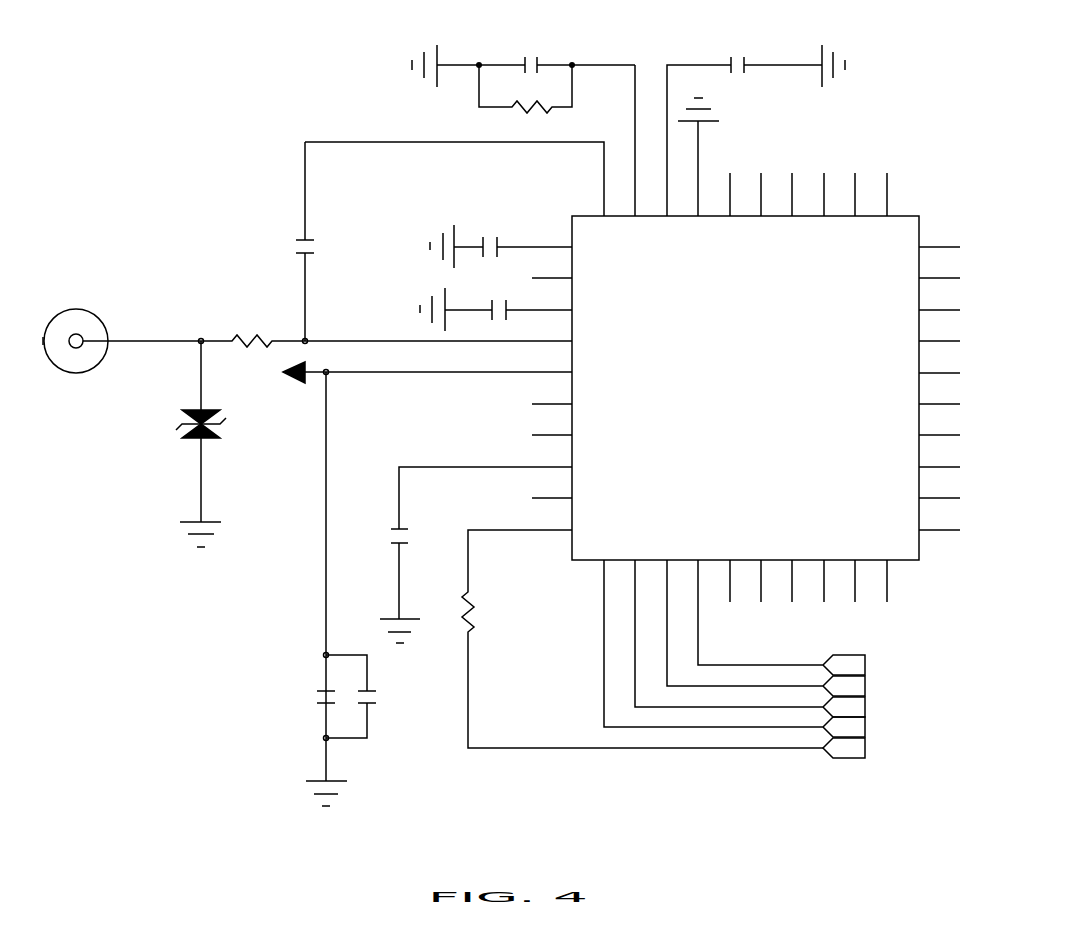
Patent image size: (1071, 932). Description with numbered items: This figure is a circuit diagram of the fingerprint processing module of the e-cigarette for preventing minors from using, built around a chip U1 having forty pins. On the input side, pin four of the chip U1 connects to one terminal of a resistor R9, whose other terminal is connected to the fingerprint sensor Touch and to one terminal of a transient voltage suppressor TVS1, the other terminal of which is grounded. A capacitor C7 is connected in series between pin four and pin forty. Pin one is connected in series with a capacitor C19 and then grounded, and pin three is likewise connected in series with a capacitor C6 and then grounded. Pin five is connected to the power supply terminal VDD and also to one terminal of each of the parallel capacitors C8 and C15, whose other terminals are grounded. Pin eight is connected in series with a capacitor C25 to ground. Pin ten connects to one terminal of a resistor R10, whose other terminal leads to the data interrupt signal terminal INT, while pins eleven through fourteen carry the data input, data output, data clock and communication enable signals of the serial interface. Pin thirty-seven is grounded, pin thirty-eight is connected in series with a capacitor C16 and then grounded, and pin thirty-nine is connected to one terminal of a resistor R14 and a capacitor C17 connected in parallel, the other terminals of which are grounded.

The chip U1 is at (746, 387).
The capacitor C17 is at (523, 118).
The resistor R14 is at (525, 98).
The capacitor C16 is at (756, 122).
The capacitor C19 is at (501, 239).
The capacitor C6 is at (496, 305).
The capacitor C7 is at (291, 241).
The resistor R9 is at (386, 323).
The transient voltage suppressor TVS1 is at (170, 444).
The capacitor C15 is at (300, 589).
The capacitor C8 is at (370, 696).
The capacitor C25 is at (476, 555).
The resistor R10 is at (642, 639).
The fingerprint sensor Touch is at (122, 327).
The power supply terminal VDD is at (406, 372).
The data interrupt signal terminal INT is at (866, 749).